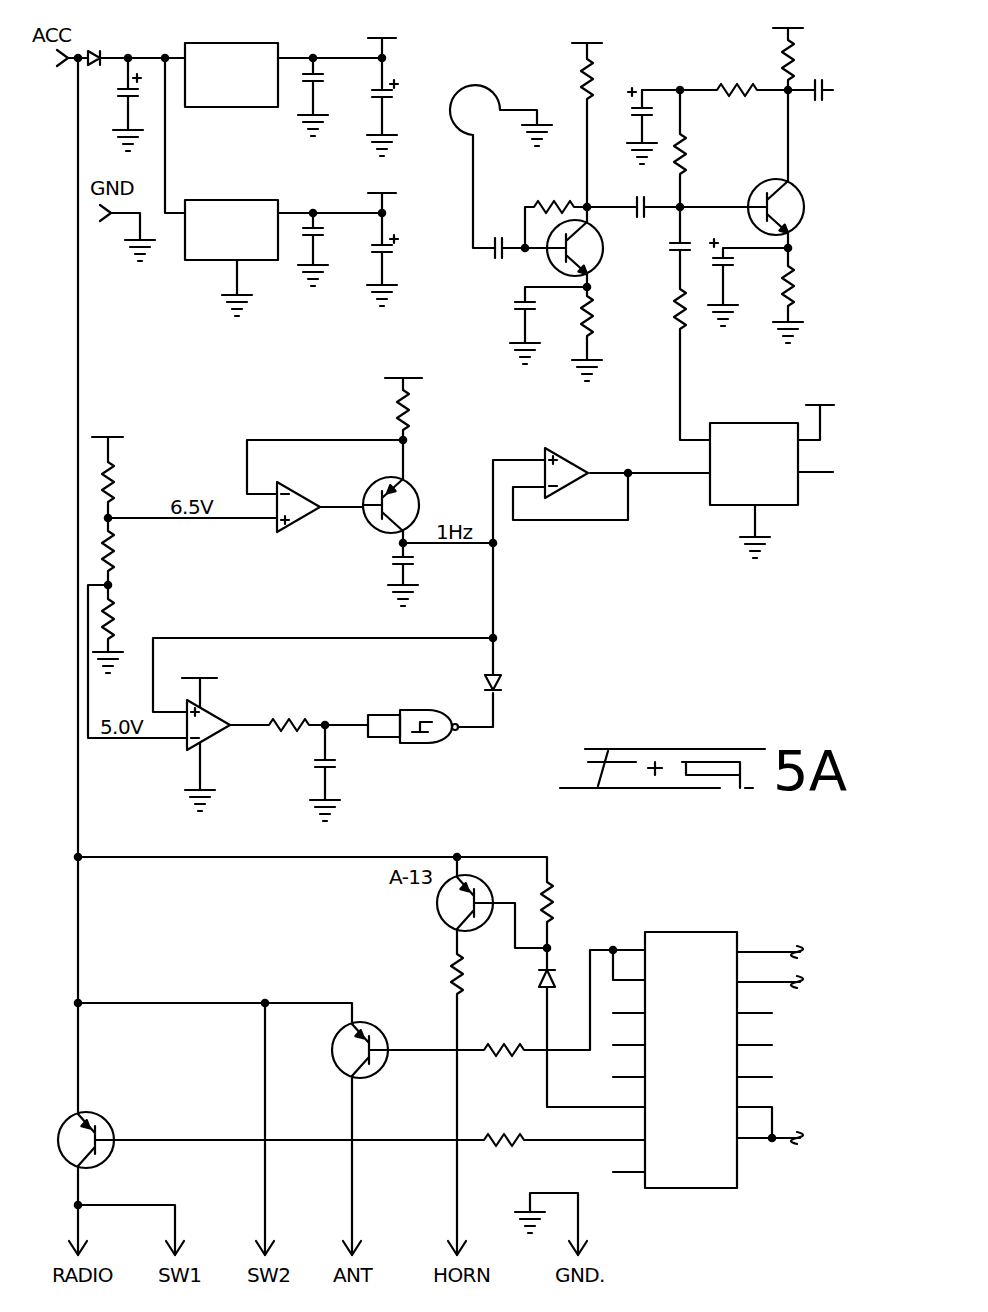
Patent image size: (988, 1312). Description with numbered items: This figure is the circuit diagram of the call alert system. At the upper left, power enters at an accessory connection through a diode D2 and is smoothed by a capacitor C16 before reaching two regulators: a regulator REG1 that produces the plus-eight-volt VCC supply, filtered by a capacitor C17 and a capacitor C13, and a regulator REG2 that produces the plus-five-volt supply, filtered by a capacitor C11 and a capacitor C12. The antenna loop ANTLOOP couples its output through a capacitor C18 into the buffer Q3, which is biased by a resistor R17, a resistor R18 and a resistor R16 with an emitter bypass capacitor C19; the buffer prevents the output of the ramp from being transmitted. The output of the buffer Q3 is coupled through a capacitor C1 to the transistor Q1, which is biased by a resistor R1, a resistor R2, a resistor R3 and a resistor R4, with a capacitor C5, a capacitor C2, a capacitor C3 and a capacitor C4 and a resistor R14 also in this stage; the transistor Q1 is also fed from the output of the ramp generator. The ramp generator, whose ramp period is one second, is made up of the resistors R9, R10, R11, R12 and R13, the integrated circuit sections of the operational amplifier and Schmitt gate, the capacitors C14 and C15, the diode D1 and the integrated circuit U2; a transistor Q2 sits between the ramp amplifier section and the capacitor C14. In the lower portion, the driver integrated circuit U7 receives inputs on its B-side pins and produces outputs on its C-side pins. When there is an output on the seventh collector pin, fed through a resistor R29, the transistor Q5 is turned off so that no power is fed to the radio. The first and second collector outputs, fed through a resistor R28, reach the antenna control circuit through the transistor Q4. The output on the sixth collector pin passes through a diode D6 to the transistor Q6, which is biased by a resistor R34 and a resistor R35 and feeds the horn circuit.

The diode D2 is at (98, 44).
The capacitor C16 is at (113, 104).
The +8V voltage regulator REG1 is at (236, 76).
The capacitor C17 is at (329, 97).
The capacitor C13 is at (400, 84).
The +5V voltage regulator REG2 is at (232, 231).
The capacitor C11 is at (329, 249).
The capacitor C12 is at (400, 238).
The antenna loop ANTLOOP is at (486, 160).
The resistor R17 is at (602, 58).
The resistor R18 is at (554, 192).
The capacitor C18 is at (501, 261).
The buffer Q3 is at (589, 248).
The capacitor C19 is at (544, 330).
The resistor R16 is at (604, 336).
The capacitor C5 is at (628, 126).
The resistor R3 is at (695, 154).
The capacitor C1 is at (640, 194).
The capacitor C2 is at (666, 245).
The resistor R14 is at (663, 309).
The resistor R2 is at (737, 74).
The resistor R1 is at (797, 43).
The capacitor C3 is at (818, 106).
The transistor Q1 is at (791, 207).
The capacitor C4 is at (737, 282).
The resistor R4 is at (799, 302).
The resistor R9 is at (119, 458).
The resistor R10 is at (131, 551).
The resistor R11 is at (126, 634).
The resistor R12 is at (419, 393).
The transistor Q2 is at (408, 505).
The capacitor C14 is at (422, 580).
The integrated circuit U2 is at (765, 469).
The resistor R13 is at (289, 712).
The capacitor C15 is at (345, 787).
The diode D1 is at (509, 688).
The transistor Q6 is at (448, 903).
The resistor R34 is at (570, 902).
The resistor R35 is at (479, 974).
The diode D6 is at (558, 995).
The transistor Q4 is at (365, 1038).
The resistor R28 is at (504, 1035).
The resistor R29 is at (504, 1125).
The transistor Q5 is at (92, 1127).
The integrated circuit U7 is at (687, 1046).